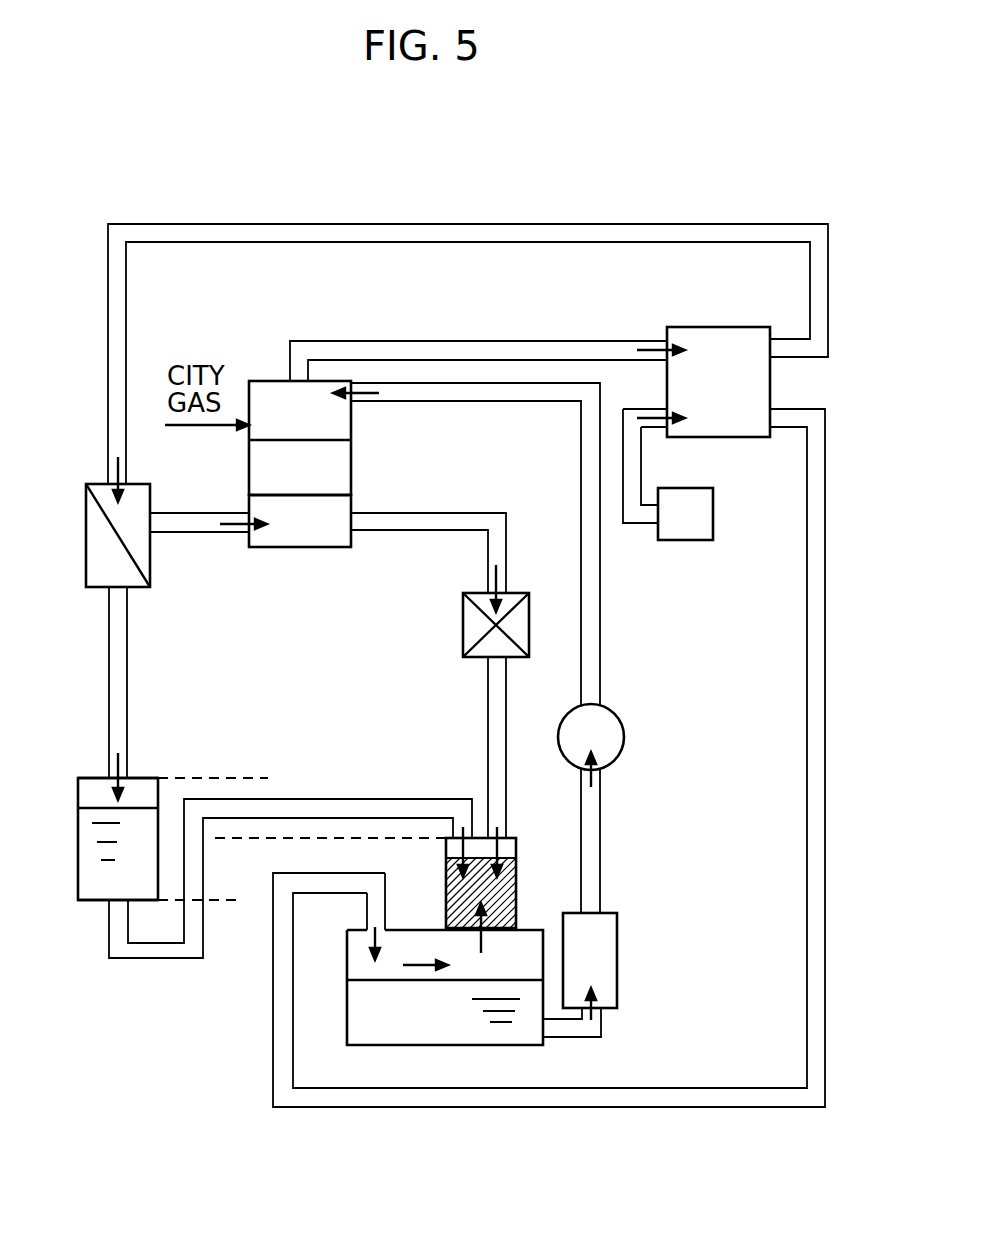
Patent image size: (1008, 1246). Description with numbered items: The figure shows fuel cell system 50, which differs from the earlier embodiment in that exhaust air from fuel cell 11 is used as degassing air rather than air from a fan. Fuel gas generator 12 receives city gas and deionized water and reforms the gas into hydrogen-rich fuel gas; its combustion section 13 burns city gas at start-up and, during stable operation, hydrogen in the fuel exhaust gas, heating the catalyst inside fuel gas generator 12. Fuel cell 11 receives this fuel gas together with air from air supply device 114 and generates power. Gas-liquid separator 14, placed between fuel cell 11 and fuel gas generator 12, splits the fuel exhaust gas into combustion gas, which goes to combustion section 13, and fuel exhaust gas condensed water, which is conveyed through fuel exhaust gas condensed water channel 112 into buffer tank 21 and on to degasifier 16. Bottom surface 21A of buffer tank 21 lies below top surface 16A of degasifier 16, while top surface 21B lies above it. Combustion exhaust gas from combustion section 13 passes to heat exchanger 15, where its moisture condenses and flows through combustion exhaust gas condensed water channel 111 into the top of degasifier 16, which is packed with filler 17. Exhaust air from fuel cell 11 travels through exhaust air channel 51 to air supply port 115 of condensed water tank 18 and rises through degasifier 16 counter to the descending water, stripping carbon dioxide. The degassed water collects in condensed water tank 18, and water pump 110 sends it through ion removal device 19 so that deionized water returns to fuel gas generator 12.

The fuel cell 11 is at (758, 393).
The fuel gas generator 12 is at (268, 373).
The combustion section 13 is at (282, 539).
The gas-liquid separator 14 is at (98, 577).
The heat exchanger 15 is at (517, 598).
The degasifier 16 is at (517, 848).
The top surface of degasifier 16A is at (512, 837).
The filler 17 is at (503, 893).
The condensed water tank 18 is at (363, 1002).
The ion removal device 19 is at (610, 972).
The buffer tank 21 is at (75, 827).
The bottom surface of buffer tank 21A is at (88, 903).
The top surface of buffer tank 21B is at (92, 777).
The fuel cell system 50 is at (90, 228).
The exhaust air channel 51 is at (826, 707).
The water pump 110 is at (626, 729).
The combustion exhaust gas condensed water channel 111 is at (507, 693).
The fuel exhaust gas condensed water channel 112 is at (128, 665).
The air supply device 114 is at (708, 520).
The air supply port 115 is at (377, 922).